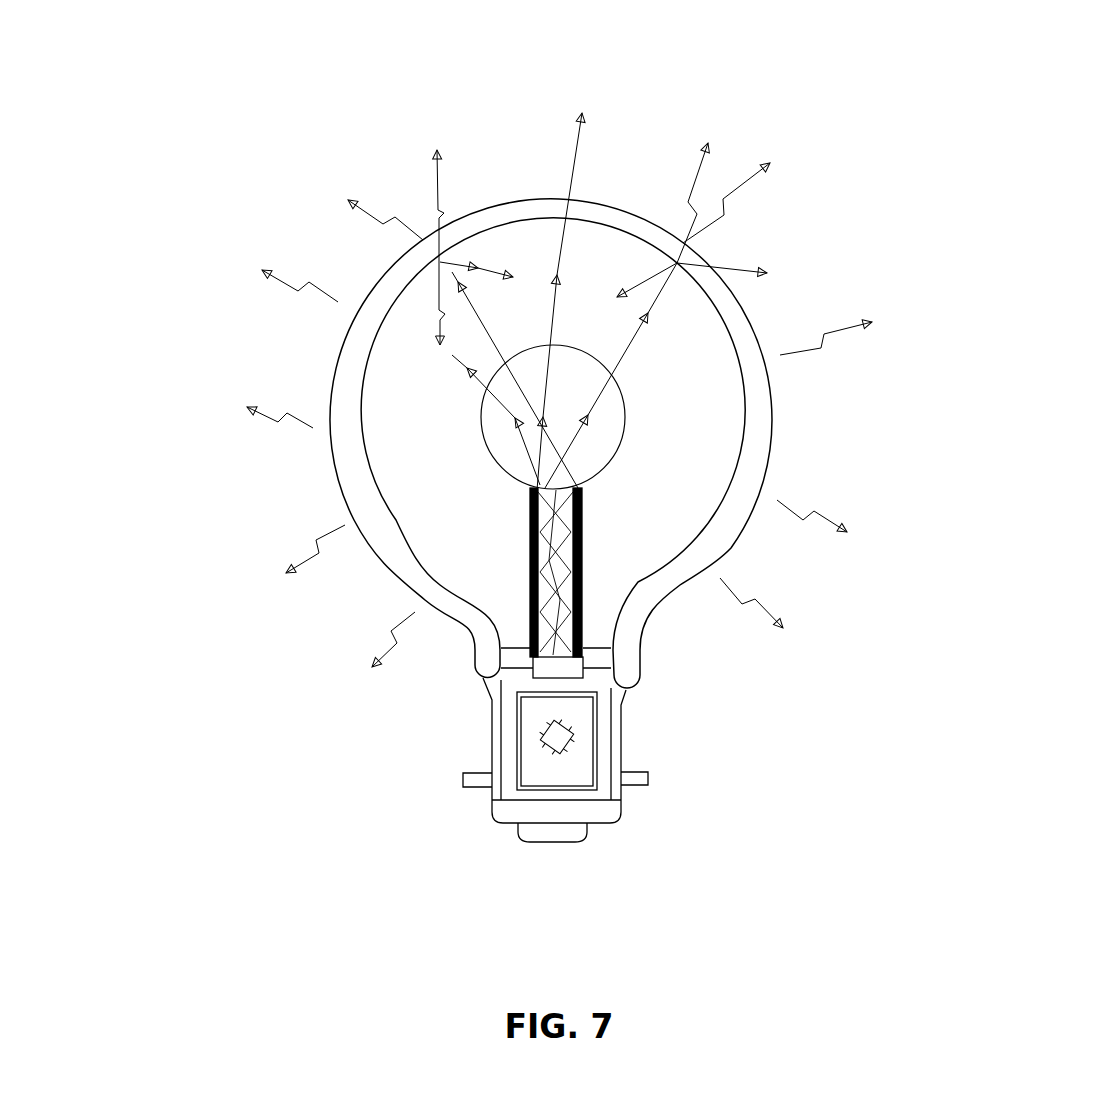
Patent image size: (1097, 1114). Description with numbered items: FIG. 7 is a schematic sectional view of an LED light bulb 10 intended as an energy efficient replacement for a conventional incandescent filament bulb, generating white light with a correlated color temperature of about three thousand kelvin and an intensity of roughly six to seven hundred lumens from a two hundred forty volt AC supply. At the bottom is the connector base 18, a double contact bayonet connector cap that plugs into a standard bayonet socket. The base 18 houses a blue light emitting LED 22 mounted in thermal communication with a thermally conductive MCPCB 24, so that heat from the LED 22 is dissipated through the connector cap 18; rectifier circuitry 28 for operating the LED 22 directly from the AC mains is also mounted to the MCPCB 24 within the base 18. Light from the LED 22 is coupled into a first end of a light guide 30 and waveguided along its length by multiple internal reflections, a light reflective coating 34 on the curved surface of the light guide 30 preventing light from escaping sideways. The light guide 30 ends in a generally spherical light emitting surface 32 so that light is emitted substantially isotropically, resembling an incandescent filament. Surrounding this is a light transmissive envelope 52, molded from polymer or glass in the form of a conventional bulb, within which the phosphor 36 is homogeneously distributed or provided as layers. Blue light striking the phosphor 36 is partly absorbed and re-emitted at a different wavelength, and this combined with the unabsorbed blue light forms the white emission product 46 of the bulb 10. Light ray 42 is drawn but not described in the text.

The LED light bulb 10 is at (182, 645).
The connector base 18 is at (602, 817).
The LED 22 is at (570, 663).
The MCPCB 24 is at (588, 763).
The rectifier circuitry 28 is at (545, 750).
The light guide 30 is at (570, 588).
The light emitting surface 32 is at (563, 418).
The light reflective coating 34 is at (530, 555).
The phosphor 36 is at (352, 376).
The light ray 42 is at (533, 446).
The emission product 46 is at (573, 148).
The light transmissive envelope 52 is at (733, 292).